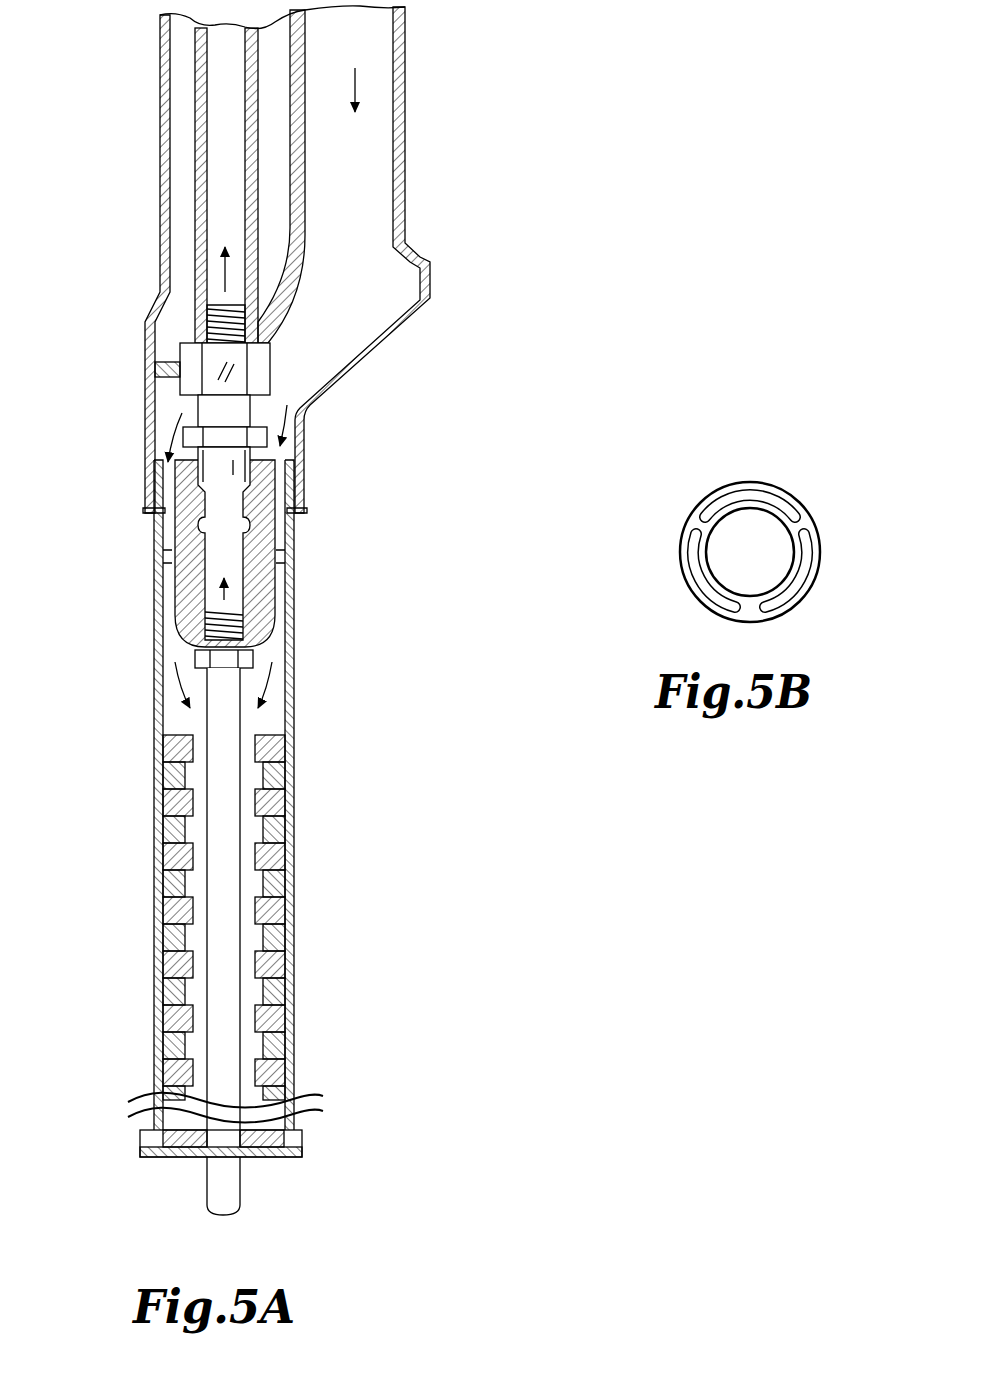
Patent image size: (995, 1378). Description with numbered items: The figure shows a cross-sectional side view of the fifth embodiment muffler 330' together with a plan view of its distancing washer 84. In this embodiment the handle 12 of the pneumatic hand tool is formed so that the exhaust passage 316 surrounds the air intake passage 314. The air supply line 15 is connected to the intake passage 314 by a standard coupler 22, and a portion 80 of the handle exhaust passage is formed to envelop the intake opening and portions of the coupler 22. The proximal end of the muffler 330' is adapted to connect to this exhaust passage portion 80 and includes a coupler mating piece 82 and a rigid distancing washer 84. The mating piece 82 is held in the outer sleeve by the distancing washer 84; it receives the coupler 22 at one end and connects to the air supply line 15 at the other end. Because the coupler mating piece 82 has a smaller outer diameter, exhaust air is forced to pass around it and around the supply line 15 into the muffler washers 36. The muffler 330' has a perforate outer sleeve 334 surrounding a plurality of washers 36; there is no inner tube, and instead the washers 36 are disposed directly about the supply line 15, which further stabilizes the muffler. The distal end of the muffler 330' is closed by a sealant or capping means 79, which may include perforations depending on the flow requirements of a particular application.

In FIG. 5A, the handle 12 is at (160, 68).
In FIG. 5A, the air intake passage 314 is at (223, 192).
In FIG. 5A, the exhaust passage 316 is at (377, 133).
In FIG. 5A, the exhaust passage portion 80 is at (303, 437).
In FIG. 5A, the coupler 22 is at (218, 470).
In FIG. 5A, the coupler mating piece 82 is at (260, 593).
In FIG. 5A, the distancing washer 84 is at (280, 558).
In FIG. 5B, the distancing washer 84 is at (813, 510).
In FIG. 5A, the perforate outer sleeve 334 is at (297, 885).
In FIG. 5A, the air supply line 15 is at (215, 715).
In FIG. 5A, the washers 36 is at (267, 967).
In FIG. 5A, the capping means 79 is at (302, 1147).
In FIG. 5A, the muffler 330' is at (452, 732).